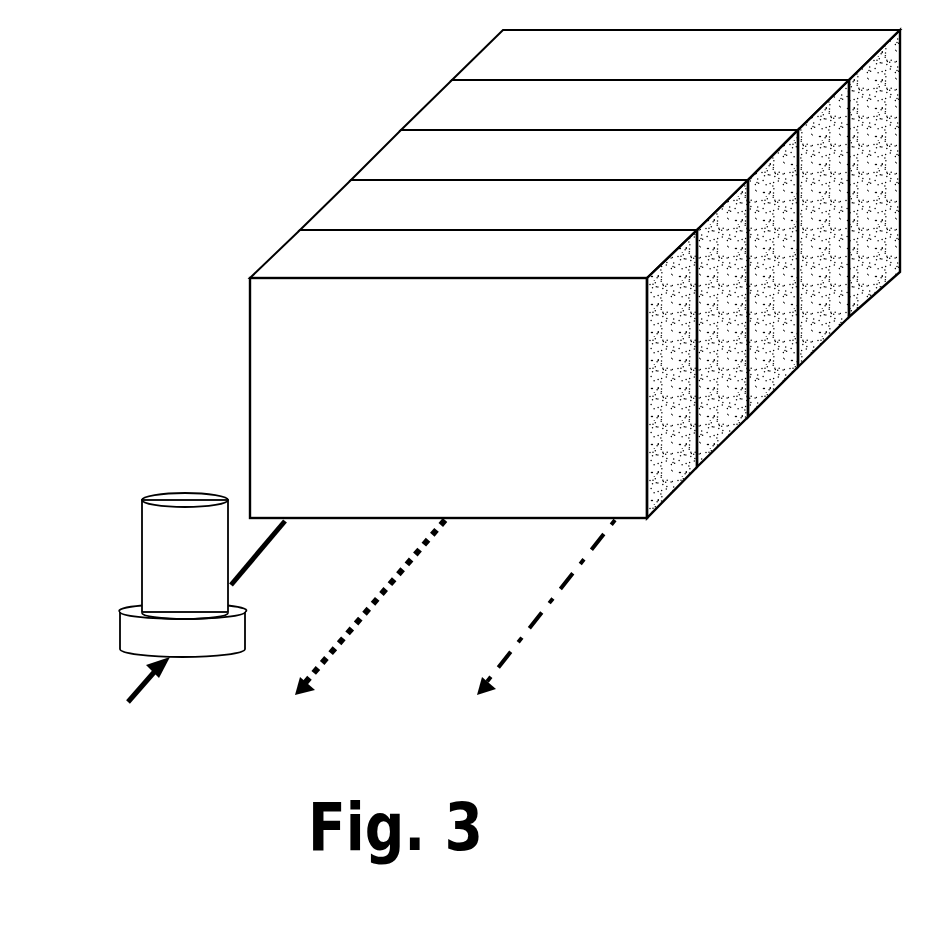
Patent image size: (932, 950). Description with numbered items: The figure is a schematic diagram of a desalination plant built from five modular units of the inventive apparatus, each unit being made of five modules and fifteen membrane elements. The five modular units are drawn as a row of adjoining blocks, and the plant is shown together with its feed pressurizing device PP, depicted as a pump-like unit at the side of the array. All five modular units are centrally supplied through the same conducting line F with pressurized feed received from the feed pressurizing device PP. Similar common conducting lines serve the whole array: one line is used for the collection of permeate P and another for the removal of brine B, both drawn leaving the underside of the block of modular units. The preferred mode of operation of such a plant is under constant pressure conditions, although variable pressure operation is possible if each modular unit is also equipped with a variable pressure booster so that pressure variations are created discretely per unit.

The feed pressurizing device PP is at (147, 575).
The conducting line for pressurized feed F is at (192, 642).
The conducting line for removal of brine B is at (353, 642).
The conducting line for collection of permeate P is at (529, 643).